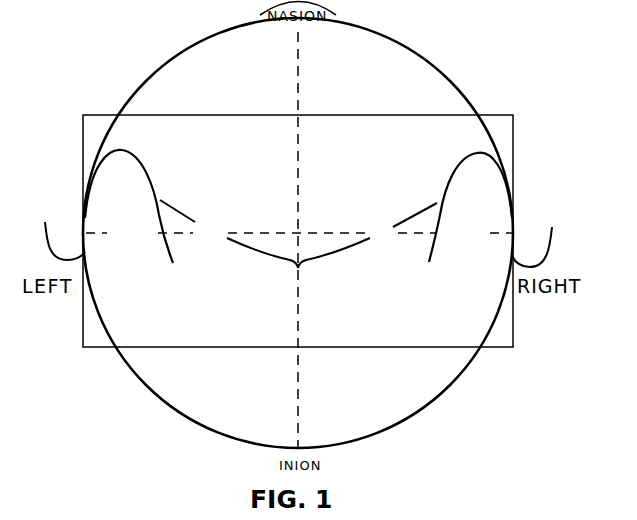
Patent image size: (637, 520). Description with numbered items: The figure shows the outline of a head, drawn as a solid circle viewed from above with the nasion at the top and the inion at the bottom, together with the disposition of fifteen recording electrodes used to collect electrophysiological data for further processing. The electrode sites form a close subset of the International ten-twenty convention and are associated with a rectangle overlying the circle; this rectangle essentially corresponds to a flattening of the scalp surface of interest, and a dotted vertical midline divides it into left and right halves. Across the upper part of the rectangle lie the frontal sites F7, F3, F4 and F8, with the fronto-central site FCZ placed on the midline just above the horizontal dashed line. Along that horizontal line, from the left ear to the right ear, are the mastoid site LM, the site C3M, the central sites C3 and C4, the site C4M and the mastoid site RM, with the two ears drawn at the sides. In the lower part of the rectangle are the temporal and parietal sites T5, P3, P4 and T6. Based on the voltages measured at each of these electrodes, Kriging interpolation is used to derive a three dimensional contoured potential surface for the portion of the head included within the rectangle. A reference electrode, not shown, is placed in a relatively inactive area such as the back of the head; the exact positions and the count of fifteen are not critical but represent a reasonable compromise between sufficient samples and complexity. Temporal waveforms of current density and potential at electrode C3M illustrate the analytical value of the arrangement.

The left mastoid electrode site LM is at (65, 241).
The right mastoid electrode site RM is at (532, 245).
The C3M electrode site C3M is at (129, 234).
The C4M electrode site C4M is at (461, 234).
The C3 electrode site C3 is at (229, 234).
The C4 electrode site C4 is at (367, 235).
The FCZ electrode site FCZ is at (296, 190).
The F7 electrode site F7 is at (165, 128).
The F3 electrode site F3 is at (228, 145).
The F4 electrode site F4 is at (368, 145).
The F8 electrode site F8 is at (430, 129).
The T5 electrode site T5 is at (164, 330).
The P3 electrode site P3 is at (224, 321).
The P4 electrode site P4 is at (359, 321).
The T6 electrode site T6 is at (429, 330).